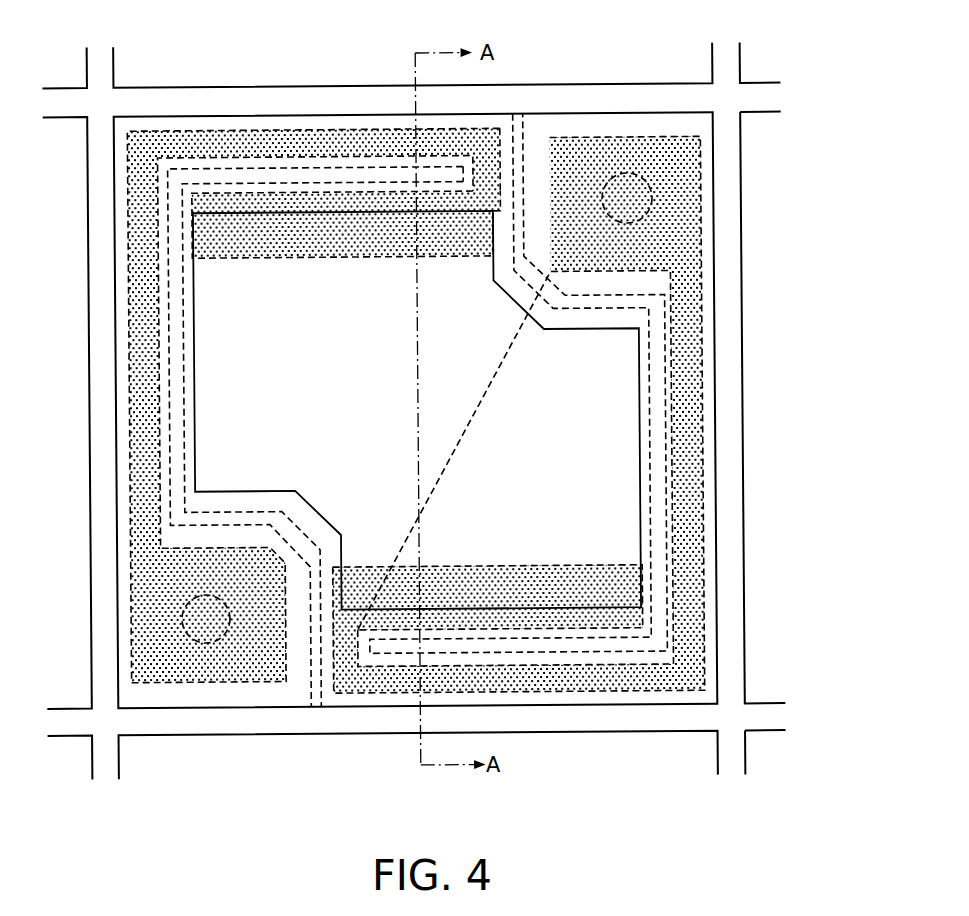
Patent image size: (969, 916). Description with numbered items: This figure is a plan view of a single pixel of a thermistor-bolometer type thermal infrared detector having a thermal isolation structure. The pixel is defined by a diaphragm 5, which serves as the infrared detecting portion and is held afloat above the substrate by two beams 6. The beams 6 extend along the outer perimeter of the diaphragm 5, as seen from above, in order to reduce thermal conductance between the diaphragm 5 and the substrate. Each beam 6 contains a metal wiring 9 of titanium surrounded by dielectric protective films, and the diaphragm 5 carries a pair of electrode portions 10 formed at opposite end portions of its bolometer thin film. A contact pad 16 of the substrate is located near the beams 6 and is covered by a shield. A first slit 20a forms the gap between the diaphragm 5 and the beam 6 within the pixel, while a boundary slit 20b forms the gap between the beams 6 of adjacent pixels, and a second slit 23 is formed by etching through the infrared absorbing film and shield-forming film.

The diaphragm 5 is at (612, 472).
The beam 6 is at (707, 390).
The metal wiring 9 is at (690, 327).
The electrode portion 10 is at (613, 588).
The contact pad 16 is at (633, 193).
The first slit 20a is at (525, 643).
The boundary slit 20b is at (707, 715).
The second slit 23 is at (345, 723).